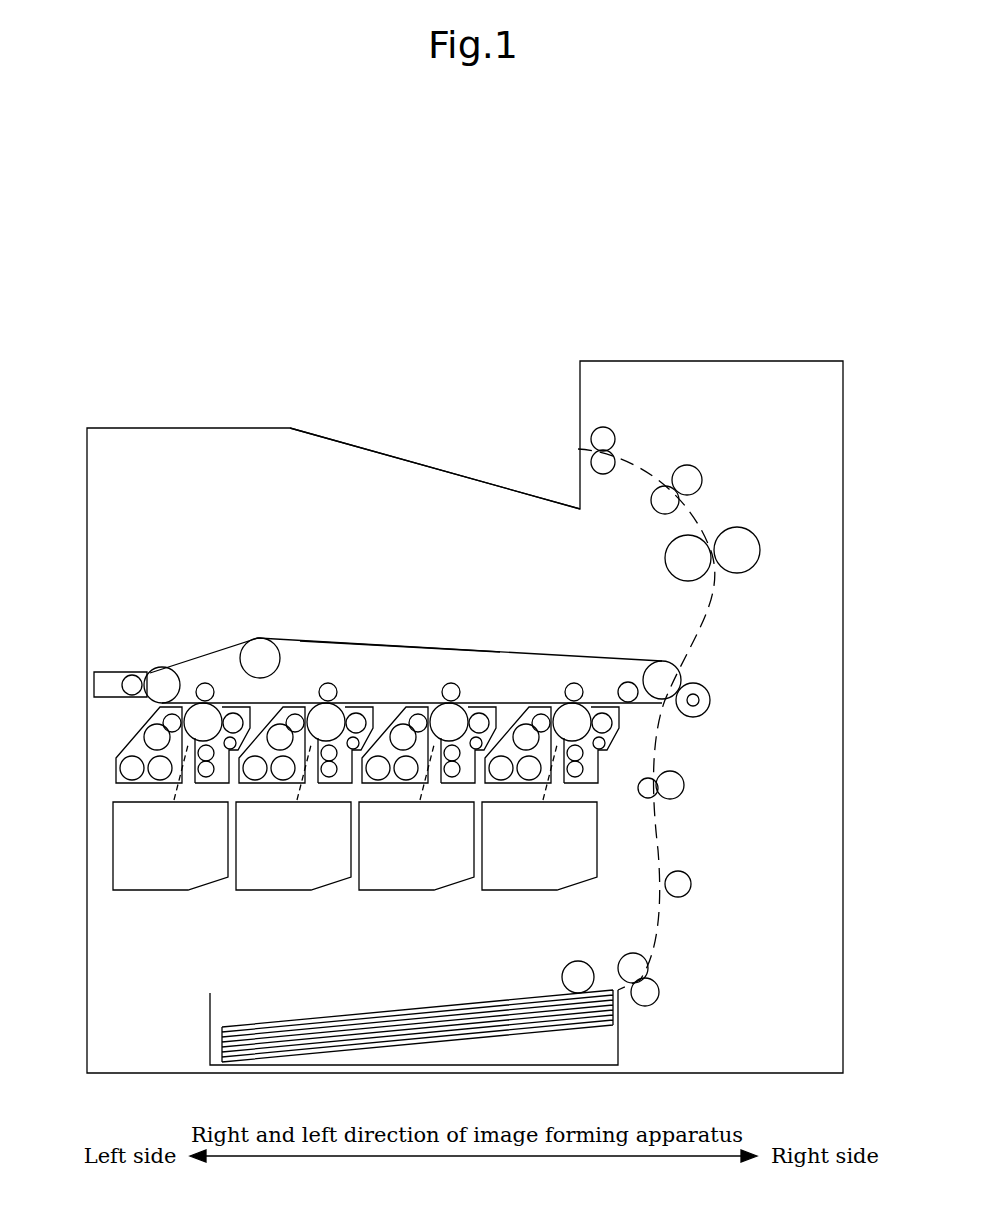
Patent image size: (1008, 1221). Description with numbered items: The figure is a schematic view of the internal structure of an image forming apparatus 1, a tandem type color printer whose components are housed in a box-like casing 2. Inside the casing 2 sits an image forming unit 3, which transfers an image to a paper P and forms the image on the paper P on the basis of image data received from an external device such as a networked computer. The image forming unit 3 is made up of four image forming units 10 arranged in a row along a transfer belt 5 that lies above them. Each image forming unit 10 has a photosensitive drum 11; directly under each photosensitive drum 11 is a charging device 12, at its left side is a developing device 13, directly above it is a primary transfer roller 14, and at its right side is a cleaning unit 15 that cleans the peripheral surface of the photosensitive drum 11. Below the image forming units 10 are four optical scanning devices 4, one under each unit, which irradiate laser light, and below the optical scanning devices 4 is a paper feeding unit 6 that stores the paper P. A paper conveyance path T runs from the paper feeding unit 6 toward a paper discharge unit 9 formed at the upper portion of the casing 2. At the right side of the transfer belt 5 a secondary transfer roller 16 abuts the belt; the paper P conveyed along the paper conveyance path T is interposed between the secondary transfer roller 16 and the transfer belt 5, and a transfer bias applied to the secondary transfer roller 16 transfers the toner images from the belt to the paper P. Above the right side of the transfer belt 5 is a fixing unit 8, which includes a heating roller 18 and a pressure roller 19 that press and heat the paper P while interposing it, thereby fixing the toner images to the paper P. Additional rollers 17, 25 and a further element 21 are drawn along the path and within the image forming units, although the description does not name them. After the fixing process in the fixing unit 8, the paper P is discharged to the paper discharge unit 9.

The image forming apparatus 1 is at (148, 336).
The casing 2 is at (84, 582).
The image forming unit 3 is at (181, 656).
The optical scanning device 4 is at (160, 890).
The transfer belt 5 is at (400, 646).
The paper feeding unit 6 is at (244, 1009).
The fixing unit 8 is at (712, 545).
The paper discharge unit 9 is at (372, 449).
The image forming unit 10 is at (219, 706).
The photosensitive drum 11 is at (190, 744).
The charging device 12 is at (207, 787).
The developing device 13 is at (150, 790).
The primary transfer roller 14 is at (212, 683).
The cleaning unit 15 is at (256, 718).
The secondary transfer roller 16 is at (710, 701).
The registration rollers 17 is at (684, 781).
The heating roller 18 is at (665, 561).
The pressure roller 19 is at (738, 528).
The supply roller 21 is at (220, 790).
The conveying roller 25 is at (691, 884).
The paper conveyance path T is at (656, 870).
The paper P is at (322, 1014).